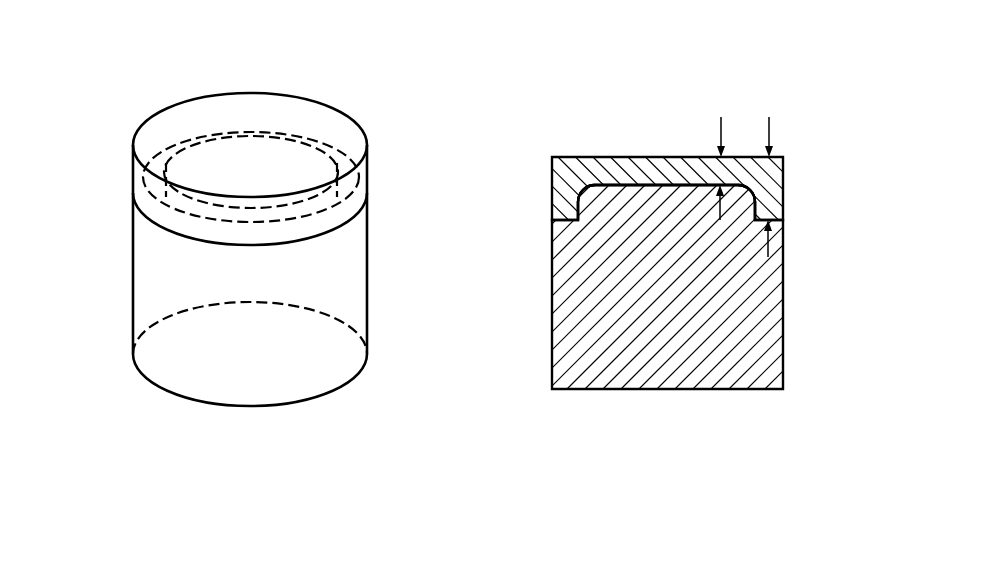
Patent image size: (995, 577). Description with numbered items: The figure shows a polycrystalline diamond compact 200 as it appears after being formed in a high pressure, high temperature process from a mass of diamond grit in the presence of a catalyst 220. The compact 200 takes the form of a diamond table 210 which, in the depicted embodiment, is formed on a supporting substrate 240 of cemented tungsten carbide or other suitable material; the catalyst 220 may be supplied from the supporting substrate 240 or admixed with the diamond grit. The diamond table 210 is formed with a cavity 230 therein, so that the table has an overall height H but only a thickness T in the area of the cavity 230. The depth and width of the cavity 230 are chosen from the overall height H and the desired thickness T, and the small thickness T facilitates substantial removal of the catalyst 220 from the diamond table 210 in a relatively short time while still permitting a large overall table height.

The polycrystalline diamond compact 200 is at (111, 108).
The diamond table 210 is at (367, 132).
The catalyst 220 is at (272, 180).
The cavity 230 is at (173, 203).
The supporting substrate 240 is at (553, 317).